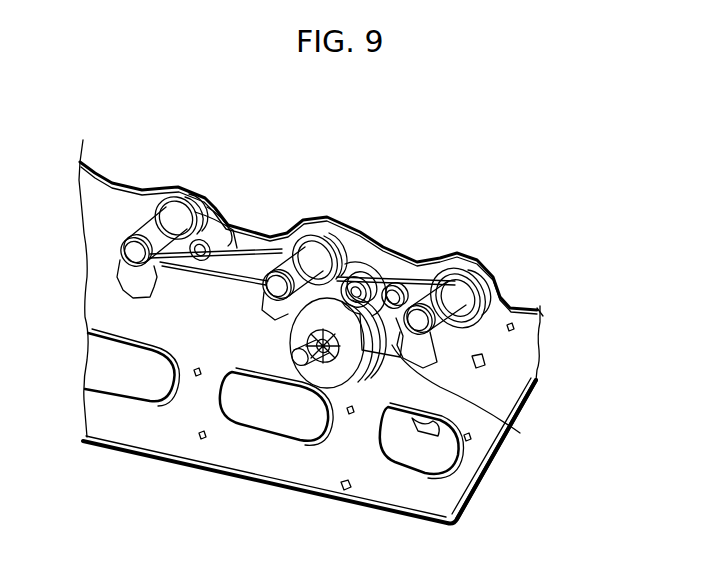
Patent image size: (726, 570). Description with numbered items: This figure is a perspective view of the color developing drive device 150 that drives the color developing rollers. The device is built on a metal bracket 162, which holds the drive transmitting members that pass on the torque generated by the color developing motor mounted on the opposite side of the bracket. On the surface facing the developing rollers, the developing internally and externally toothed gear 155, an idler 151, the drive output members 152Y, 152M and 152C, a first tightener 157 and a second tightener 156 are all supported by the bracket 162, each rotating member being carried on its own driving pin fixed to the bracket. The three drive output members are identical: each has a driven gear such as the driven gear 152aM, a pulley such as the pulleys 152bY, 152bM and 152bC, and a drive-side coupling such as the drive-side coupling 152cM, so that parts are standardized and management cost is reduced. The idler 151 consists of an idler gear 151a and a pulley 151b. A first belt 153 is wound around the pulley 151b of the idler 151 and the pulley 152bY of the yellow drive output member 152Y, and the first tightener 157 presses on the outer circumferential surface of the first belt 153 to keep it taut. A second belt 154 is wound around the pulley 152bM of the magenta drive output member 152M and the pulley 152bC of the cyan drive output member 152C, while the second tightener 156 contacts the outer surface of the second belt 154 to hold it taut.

The color developing drive device 150 is at (513, 150).
The idler 151 is at (405, 234).
The idler gear 151a is at (392, 280).
The pulley 151b is at (423, 265).
The drive output member 152M is at (338, 212).
The driven gear 152aM is at (385, 262).
The pulley 152bM is at (335, 247).
The drive-side coupling 152cM is at (275, 270).
The drive output member 152C is at (160, 213).
The pulley 152bC is at (152, 215).
The drive output member 152Y is at (488, 303).
The pulley 152bY is at (475, 287).
The first belt 153 is at (400, 255).
The second belt 154 is at (247, 247).
The developing internally and externally toothed gear 155 is at (343, 373).
The second tightener 156 is at (227, 237).
The first tightener 157 is at (513, 430).
The bracket 162 is at (530, 325).